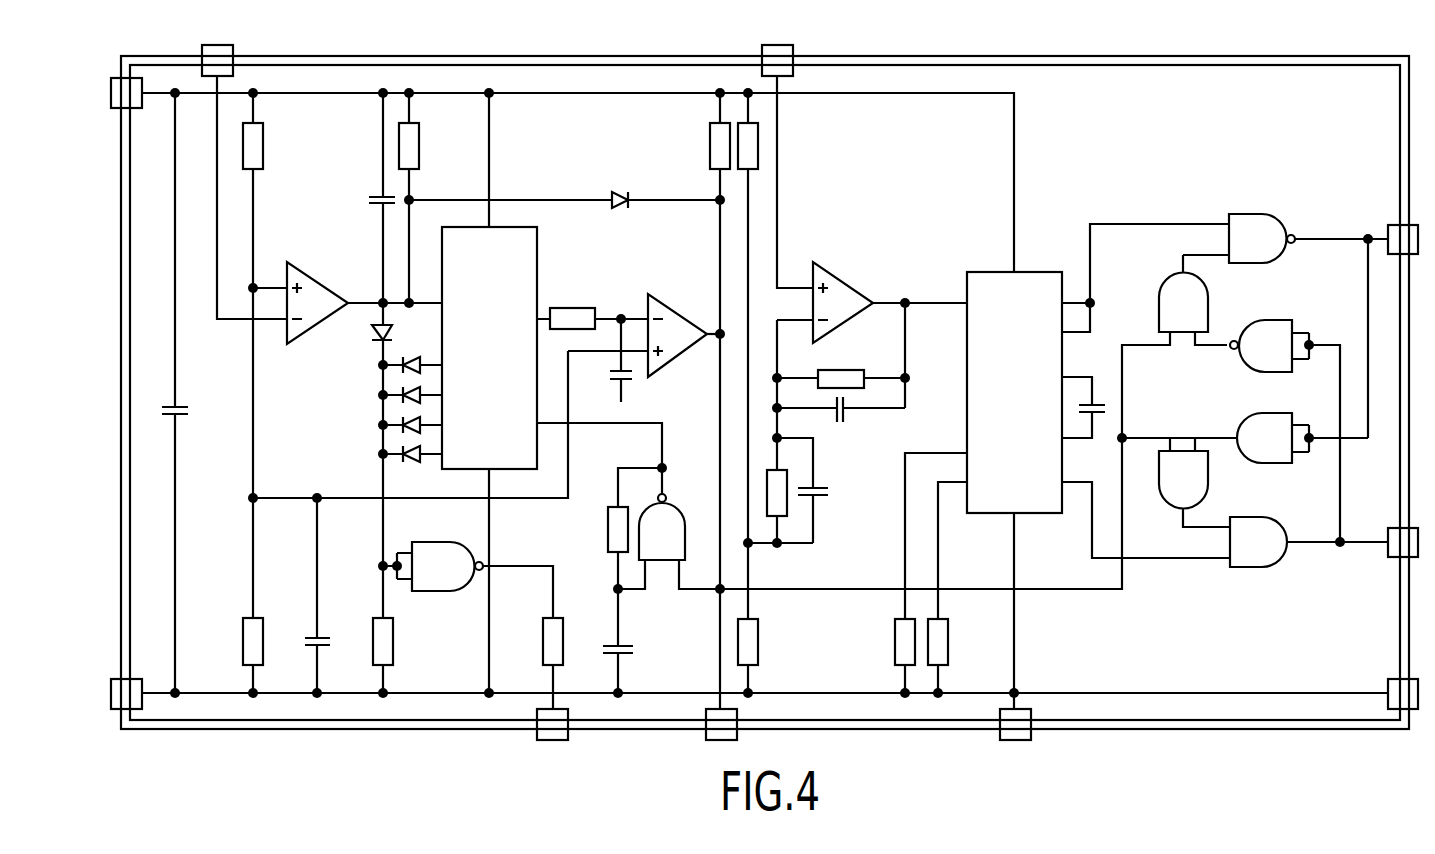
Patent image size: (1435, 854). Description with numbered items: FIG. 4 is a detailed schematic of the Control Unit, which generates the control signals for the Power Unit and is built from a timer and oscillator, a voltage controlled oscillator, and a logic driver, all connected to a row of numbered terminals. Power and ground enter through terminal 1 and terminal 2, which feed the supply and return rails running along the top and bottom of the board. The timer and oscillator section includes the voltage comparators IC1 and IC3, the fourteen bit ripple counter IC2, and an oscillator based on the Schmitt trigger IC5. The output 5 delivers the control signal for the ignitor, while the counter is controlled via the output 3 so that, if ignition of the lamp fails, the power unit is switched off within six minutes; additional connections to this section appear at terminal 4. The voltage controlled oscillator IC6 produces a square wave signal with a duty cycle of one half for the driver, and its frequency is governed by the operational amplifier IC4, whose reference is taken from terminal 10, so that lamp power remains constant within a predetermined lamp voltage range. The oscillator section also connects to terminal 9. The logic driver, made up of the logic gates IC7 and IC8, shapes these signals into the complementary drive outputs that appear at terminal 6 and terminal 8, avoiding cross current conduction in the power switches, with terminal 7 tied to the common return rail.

The terminal 1 is at (126, 93).
The terminal 2 is at (126, 694).
The output 3 is at (217, 60).
The terminal 4 is at (721, 724).
The output 5 is at (552, 724).
The terminal 6 is at (1403, 240).
The terminal 7 is at (1403, 694).
The terminal 8 is at (1403, 543).
The terminal 9 is at (1015, 724).
The terminal 10 is at (777, 60).
The voltage comparator IC1 is at (317, 285).
The 14 bit ripple counter IC2 is at (489, 348).
The voltage comparator IC3 is at (677, 322).
The operational amplifier IC4 is at (843, 291).
The Schmitt trigger IC5 is at (662, 558).
The voltage controlled oscillator IC6 is at (1014, 392).
The logic gate IC7 is at (1227, 390).
The logic gate IC8 is at (1261, 391).